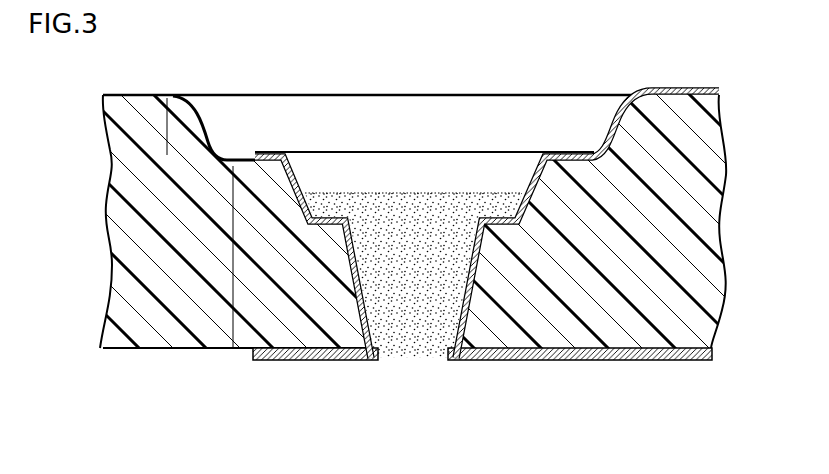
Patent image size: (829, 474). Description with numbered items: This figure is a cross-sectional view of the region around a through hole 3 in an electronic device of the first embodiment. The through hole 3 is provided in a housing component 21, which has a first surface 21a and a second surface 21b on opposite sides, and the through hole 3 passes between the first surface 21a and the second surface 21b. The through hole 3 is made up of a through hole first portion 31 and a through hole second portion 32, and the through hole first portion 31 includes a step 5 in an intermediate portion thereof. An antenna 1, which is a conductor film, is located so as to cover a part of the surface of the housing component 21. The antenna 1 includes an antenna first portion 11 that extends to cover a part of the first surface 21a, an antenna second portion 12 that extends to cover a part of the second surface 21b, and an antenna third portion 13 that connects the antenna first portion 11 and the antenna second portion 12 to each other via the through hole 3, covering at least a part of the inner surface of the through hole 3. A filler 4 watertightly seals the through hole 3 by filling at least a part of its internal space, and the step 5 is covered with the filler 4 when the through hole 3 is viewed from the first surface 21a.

The antenna 1 is at (414, 251).
The antenna first portion 11 is at (693, 88).
The antenna second portion 12 is at (614, 358).
The antenna third portion 13 is at (735, 402).
The through hole 3 is at (410, 137).
The filler 4 is at (414, 316).
The step 5 is at (327, 212).
The housing component 21 is at (137, 229).
The first surface 21a is at (135, 93).
The second surface 21b is at (134, 350).
The through hole first portion 31 is at (233, 253).
The through hole second portion 32 is at (168, 122).